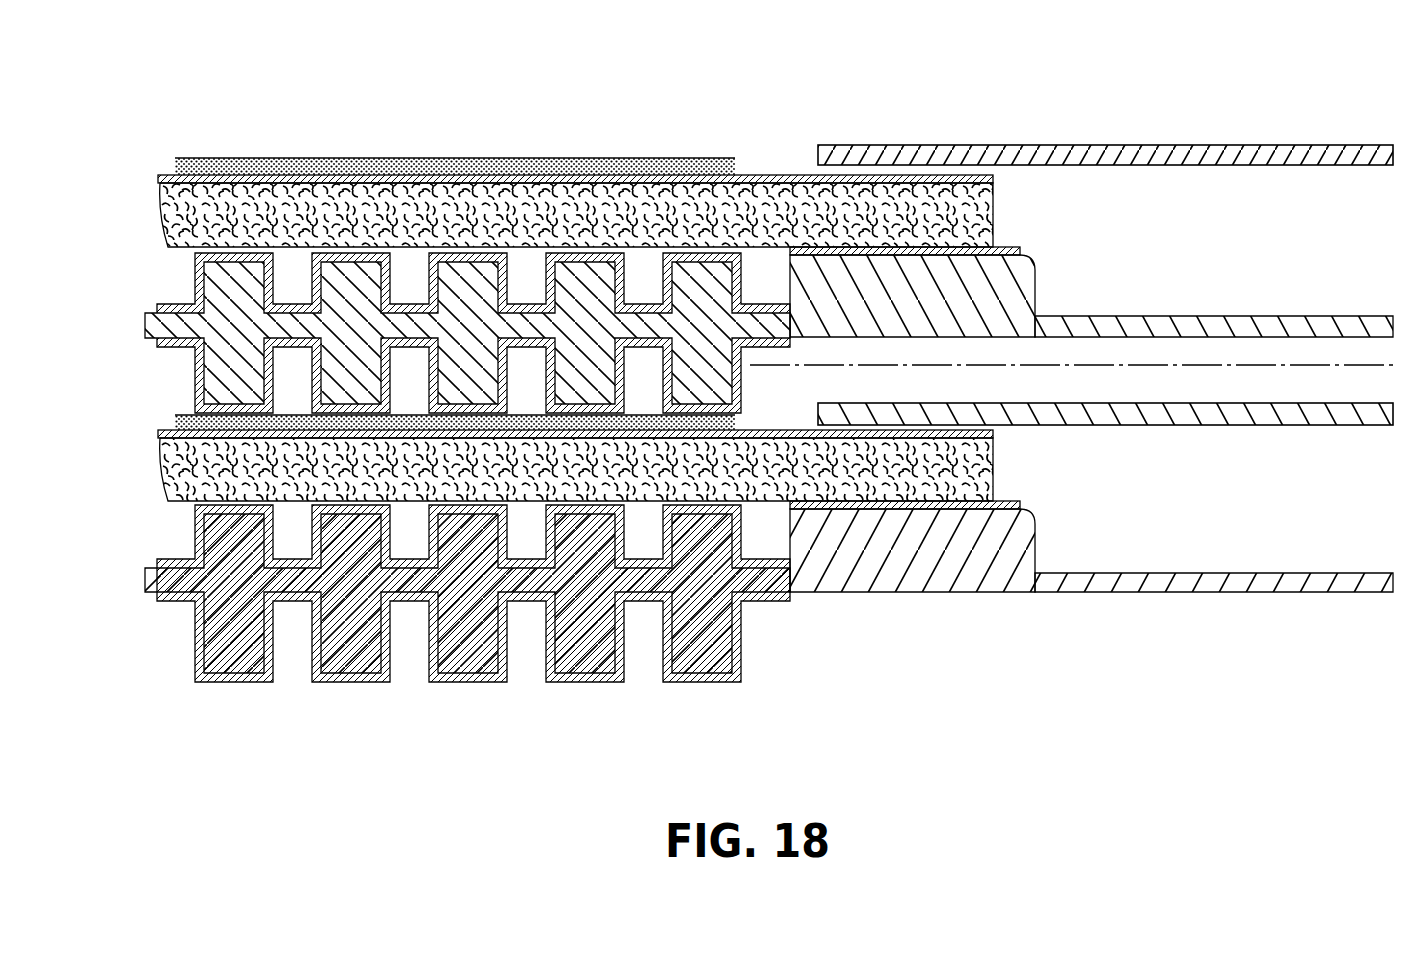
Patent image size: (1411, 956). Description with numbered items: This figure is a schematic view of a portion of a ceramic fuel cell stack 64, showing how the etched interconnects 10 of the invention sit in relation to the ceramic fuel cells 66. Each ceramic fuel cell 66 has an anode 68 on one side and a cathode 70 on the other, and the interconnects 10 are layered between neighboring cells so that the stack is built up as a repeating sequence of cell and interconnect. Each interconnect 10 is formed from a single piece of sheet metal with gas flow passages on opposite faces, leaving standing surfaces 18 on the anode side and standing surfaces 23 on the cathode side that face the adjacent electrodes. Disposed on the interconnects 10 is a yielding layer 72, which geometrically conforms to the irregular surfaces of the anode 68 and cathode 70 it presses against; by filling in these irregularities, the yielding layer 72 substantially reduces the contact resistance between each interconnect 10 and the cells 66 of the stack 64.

The interconnect 10 is at (1035, 262).
The standing surfaces 18 is at (727, 247).
The standing surfaces 23 is at (680, 684).
The ceramic fuel cell stack 64 is at (940, 114).
The ceramic fuel cells 66 is at (172, 176).
The anodes 68 is at (167, 228).
The cathodes 70 is at (240, 158).
The yielding layer 72 is at (195, 278).